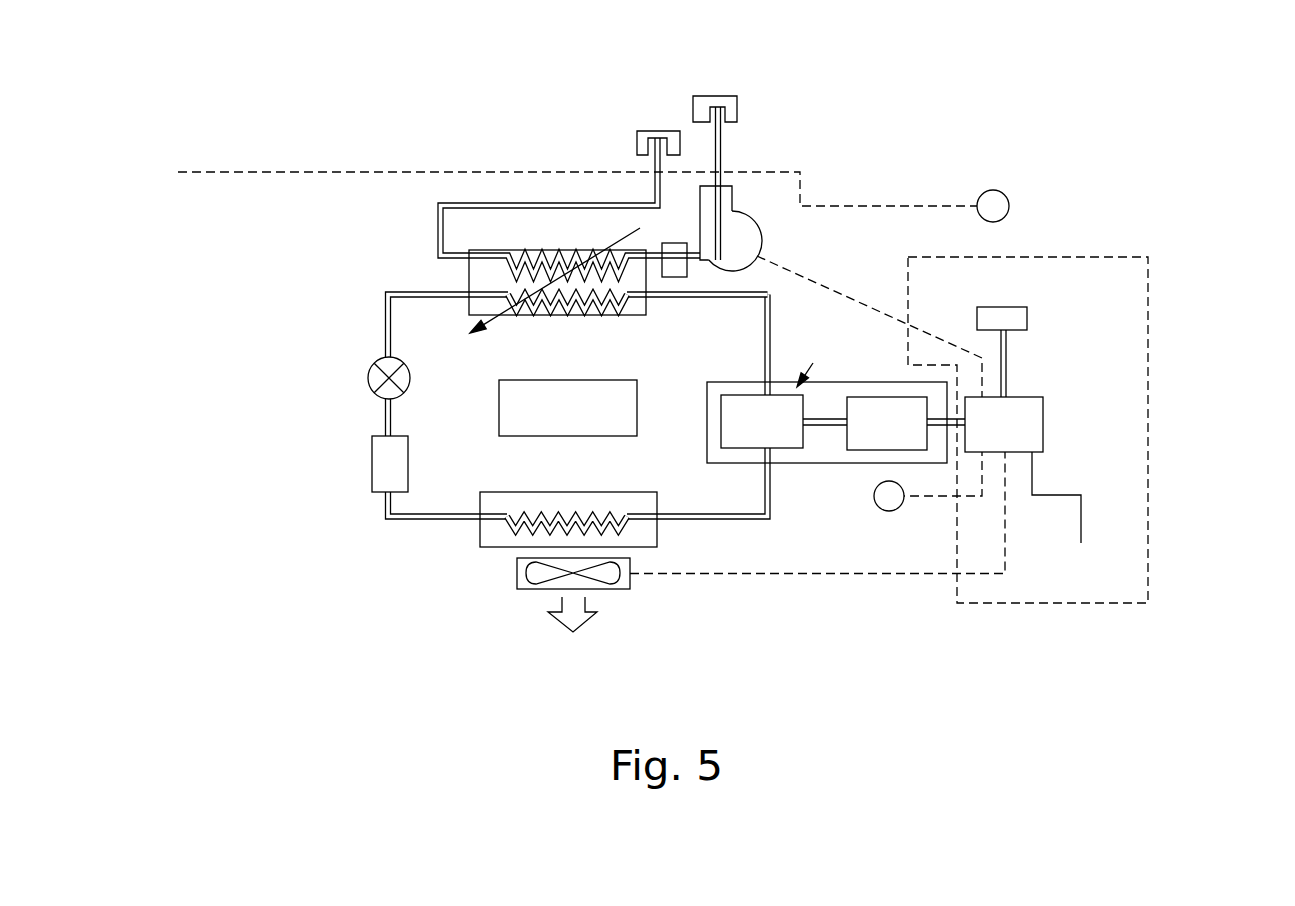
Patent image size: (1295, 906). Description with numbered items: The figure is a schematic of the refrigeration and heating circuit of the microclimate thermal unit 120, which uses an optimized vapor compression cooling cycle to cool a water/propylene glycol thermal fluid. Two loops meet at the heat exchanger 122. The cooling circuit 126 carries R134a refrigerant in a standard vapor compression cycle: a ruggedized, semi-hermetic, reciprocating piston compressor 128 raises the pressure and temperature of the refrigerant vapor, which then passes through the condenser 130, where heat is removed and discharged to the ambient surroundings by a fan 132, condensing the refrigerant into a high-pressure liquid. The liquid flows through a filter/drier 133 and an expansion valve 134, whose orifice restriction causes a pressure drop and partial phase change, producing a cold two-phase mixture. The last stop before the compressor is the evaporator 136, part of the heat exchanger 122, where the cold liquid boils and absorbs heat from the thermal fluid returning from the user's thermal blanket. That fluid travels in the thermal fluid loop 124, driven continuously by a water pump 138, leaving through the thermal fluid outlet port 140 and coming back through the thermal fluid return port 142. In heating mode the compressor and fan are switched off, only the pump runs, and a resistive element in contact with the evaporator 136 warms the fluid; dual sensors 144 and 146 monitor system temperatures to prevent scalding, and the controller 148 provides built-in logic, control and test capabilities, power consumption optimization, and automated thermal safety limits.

The microclimate thermal unit 120 is at (226, 295).
The heat exchanger 122 is at (468, 283).
The thermal fluid loop 124 is at (477, 204).
The cooling circuit 126 is at (417, 519).
The compressor 128 is at (778, 450).
The condenser 130 is at (658, 531).
The fan 132 is at (632, 589).
The filter/drier 133 is at (372, 488).
The expansion valve 134 is at (368, 387).
The evaporator 136 is at (625, 315).
The water pump 138 is at (758, 227).
The thermal fluid outlet port 140 is at (737, 118).
The thermal fluid return port 142 is at (637, 148).
The sensor 144 is at (889, 511).
The sensor 146 is at (1008, 197).
The controller 148 is at (1148, 310).